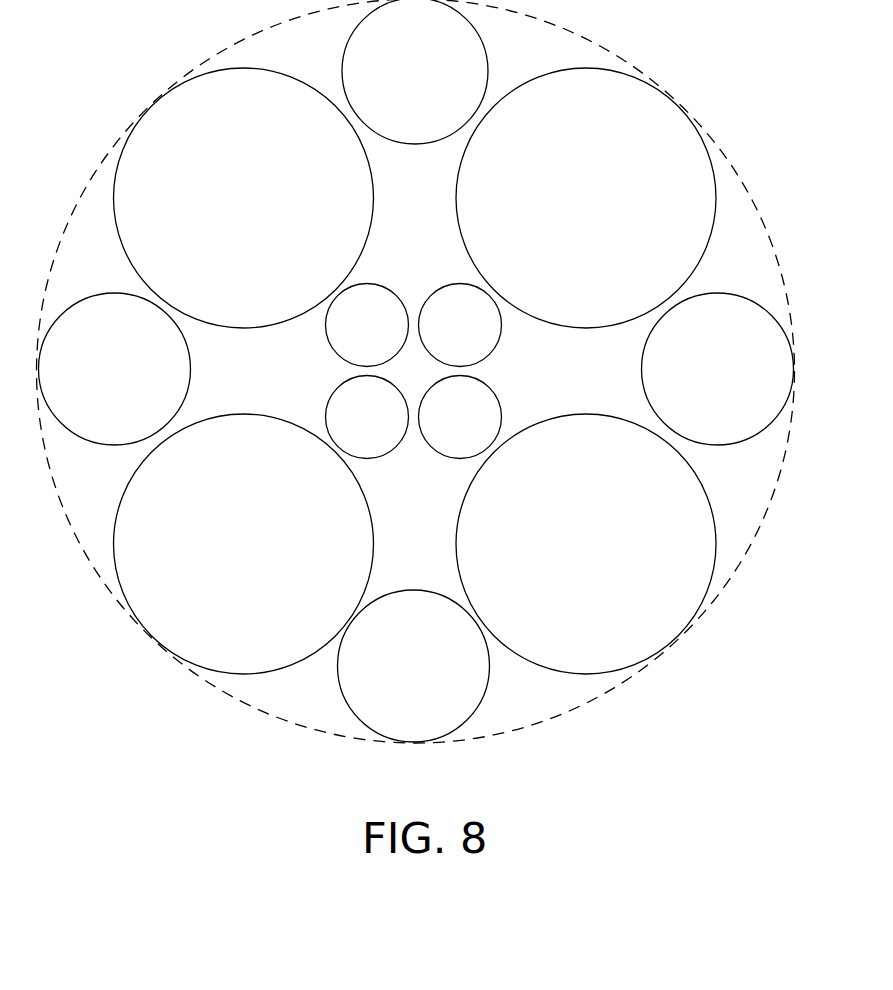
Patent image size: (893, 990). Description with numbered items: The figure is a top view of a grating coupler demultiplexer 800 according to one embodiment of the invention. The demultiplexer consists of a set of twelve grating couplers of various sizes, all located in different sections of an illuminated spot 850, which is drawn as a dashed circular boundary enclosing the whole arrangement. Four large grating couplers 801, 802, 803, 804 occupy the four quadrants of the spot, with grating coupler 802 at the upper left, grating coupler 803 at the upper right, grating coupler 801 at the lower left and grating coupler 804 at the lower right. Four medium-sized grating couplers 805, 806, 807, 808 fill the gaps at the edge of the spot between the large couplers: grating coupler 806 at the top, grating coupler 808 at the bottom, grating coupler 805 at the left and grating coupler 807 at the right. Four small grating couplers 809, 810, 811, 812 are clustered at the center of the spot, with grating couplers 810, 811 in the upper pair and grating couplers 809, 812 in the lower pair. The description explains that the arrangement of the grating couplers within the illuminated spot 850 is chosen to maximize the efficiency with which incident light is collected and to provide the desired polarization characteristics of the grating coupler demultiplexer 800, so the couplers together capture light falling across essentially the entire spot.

The grating coupler demultiplexer 800 is at (222, 748).
The illuminated spot 850 is at (187, 663).
The grating coupler 801 is at (218, 561).
The grating coupler 802 is at (218, 214).
The grating coupler 803 is at (560, 214).
The grating coupler 804 is at (560, 561).
The grating coupler 805 is at (89, 385).
The grating coupler 806 is at (388, 87).
The grating coupler 807 is at (692, 385).
The grating coupler 808 is at (388, 683).
The grating coupler 809 is at (342, 432).
The grating coupler 810 is at (342, 339).
The grating coupler 811 is at (435, 339).
The grating coupler 812 is at (435, 432).